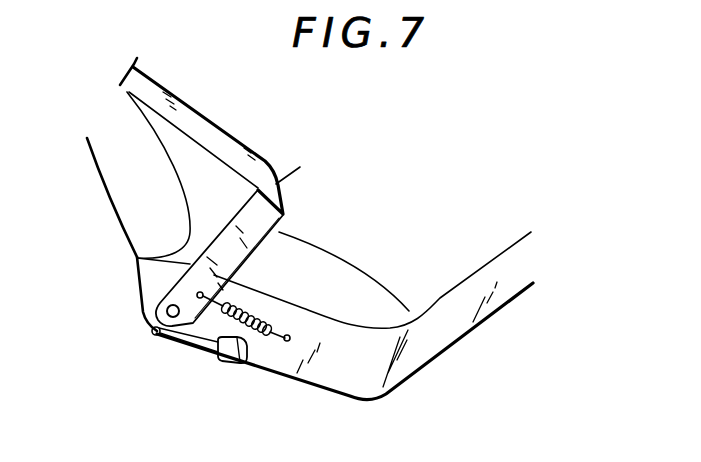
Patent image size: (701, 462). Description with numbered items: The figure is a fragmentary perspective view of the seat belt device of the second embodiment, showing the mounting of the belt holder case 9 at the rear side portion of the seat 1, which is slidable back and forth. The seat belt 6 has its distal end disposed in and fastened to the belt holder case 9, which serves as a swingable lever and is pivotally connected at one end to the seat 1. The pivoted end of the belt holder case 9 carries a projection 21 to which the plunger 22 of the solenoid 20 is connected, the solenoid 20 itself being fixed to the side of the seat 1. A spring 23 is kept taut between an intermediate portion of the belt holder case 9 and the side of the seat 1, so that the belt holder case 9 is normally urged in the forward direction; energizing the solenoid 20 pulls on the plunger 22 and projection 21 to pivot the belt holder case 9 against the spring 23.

The seat 1 is at (303, 222).
The seat belt 6 is at (188, 114).
The belt holder case 9 is at (252, 215).
The solenoid 20 is at (236, 364).
The projection 21 is at (147, 323).
The plunger 22 is at (197, 351).
The spring 23 is at (258, 314).